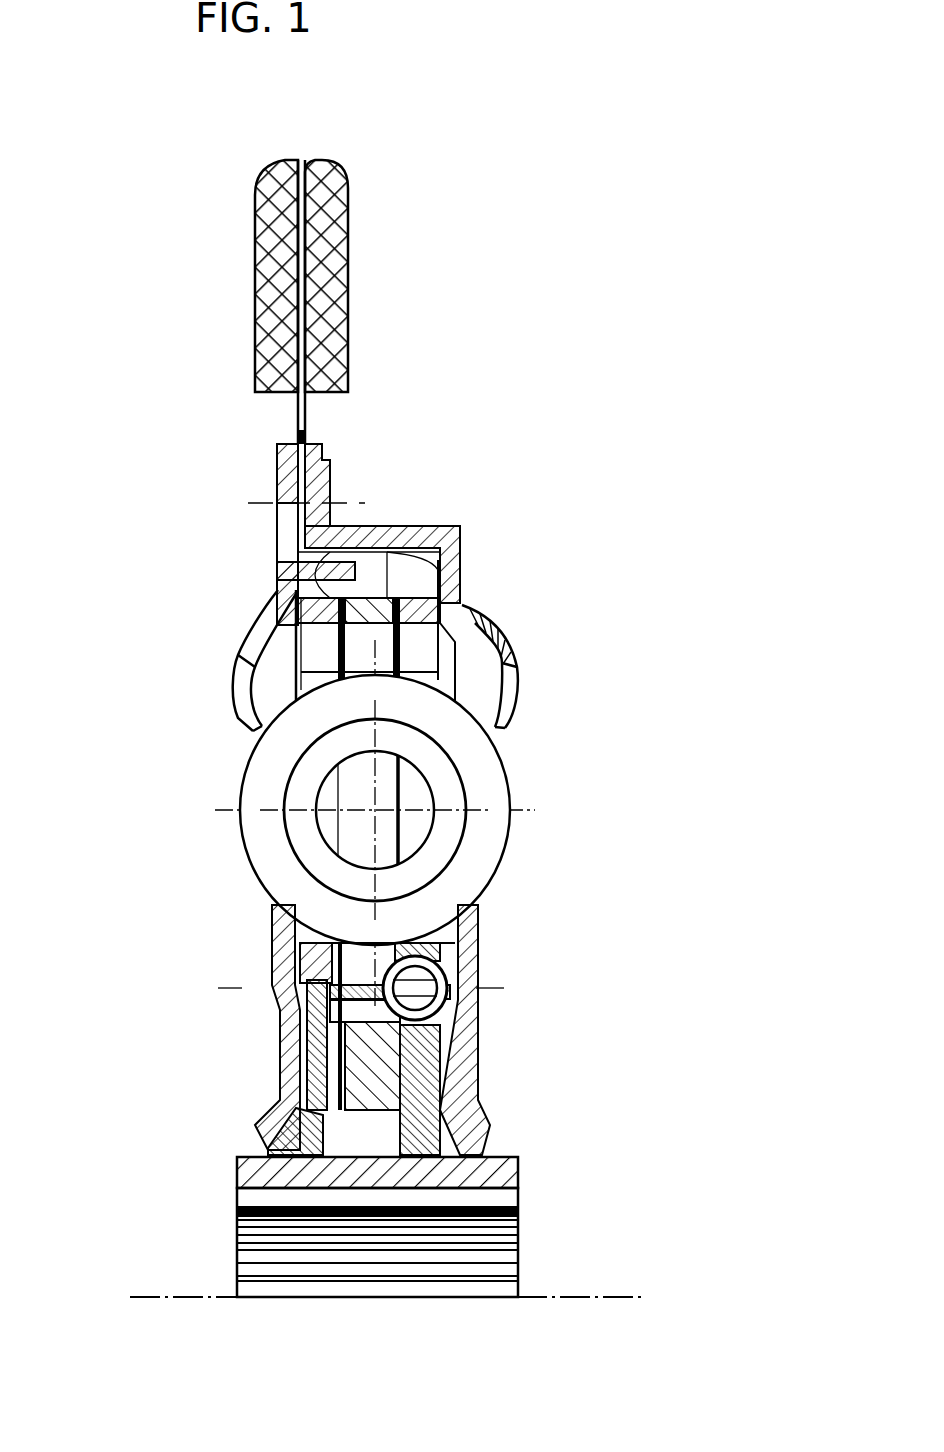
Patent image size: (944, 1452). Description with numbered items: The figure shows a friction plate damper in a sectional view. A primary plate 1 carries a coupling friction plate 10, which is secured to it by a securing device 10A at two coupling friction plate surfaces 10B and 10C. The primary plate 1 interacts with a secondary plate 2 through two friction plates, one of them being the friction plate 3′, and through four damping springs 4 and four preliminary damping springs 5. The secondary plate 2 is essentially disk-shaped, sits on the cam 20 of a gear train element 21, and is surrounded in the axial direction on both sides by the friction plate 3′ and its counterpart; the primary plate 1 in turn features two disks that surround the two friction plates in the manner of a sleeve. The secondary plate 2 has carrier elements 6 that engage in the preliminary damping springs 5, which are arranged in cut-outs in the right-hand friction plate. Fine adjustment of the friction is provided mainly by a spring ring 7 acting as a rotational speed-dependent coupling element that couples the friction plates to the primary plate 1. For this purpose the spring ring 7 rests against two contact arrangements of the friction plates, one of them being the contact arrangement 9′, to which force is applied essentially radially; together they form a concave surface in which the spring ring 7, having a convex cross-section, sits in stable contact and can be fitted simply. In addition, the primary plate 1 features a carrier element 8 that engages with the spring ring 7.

The coupling friction plate 10 is at (366, 276).
The securing device 10A is at (300, 432).
The coupling friction plate surface 10B is at (268, 363).
The coupling friction plate surface 10C is at (325, 295).
The primary plate 1 is at (287, 480).
The spring ring 7 is at (373, 573).
The carrier element 8 is at (298, 567).
The contact arrangement 9′ is at (327, 583).
The damping spring 4 is at (478, 765).
The preliminary damping spring 5 is at (428, 962).
The carrier element 6 is at (300, 1015).
The secondary plate 2 is at (367, 1068).
The friction plate 3′ is at (310, 1078).
The cam 20 is at (362, 1155).
The gear train element 21 is at (260, 1199).